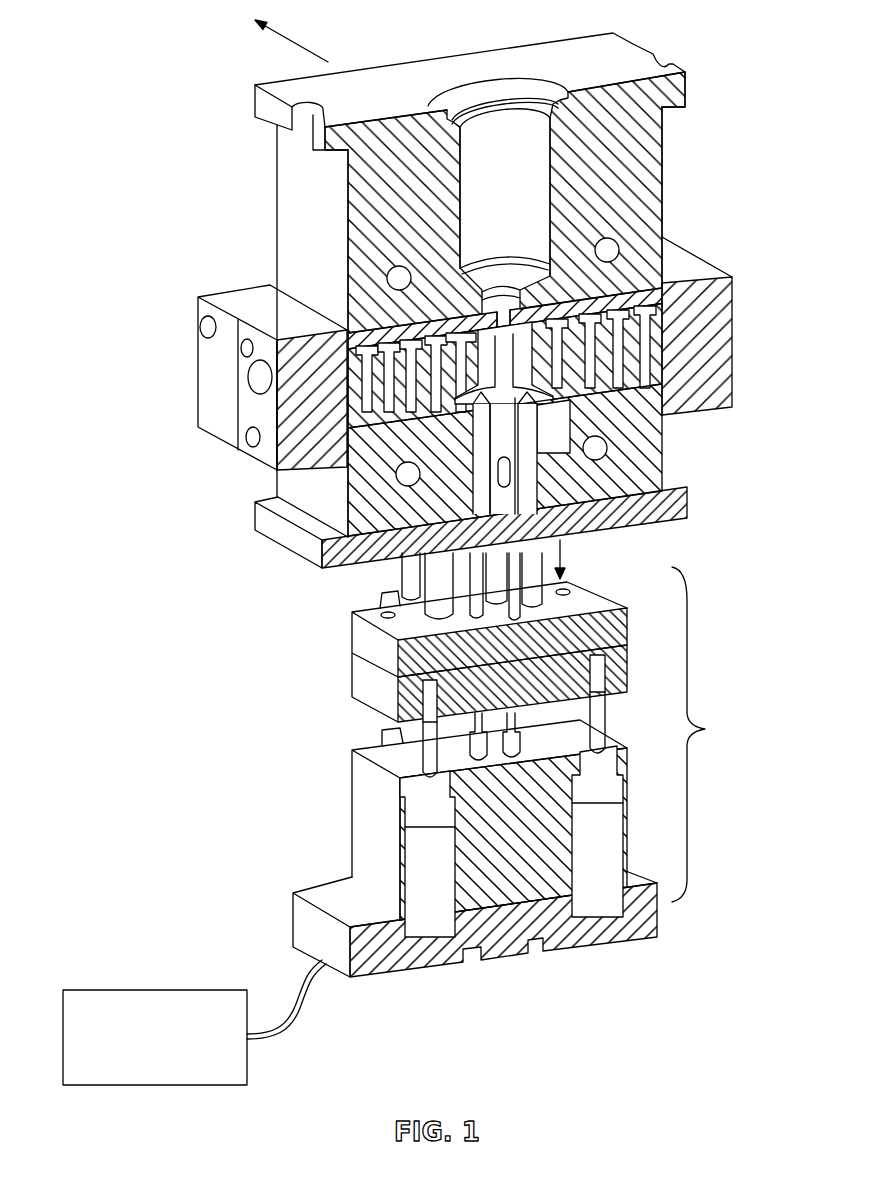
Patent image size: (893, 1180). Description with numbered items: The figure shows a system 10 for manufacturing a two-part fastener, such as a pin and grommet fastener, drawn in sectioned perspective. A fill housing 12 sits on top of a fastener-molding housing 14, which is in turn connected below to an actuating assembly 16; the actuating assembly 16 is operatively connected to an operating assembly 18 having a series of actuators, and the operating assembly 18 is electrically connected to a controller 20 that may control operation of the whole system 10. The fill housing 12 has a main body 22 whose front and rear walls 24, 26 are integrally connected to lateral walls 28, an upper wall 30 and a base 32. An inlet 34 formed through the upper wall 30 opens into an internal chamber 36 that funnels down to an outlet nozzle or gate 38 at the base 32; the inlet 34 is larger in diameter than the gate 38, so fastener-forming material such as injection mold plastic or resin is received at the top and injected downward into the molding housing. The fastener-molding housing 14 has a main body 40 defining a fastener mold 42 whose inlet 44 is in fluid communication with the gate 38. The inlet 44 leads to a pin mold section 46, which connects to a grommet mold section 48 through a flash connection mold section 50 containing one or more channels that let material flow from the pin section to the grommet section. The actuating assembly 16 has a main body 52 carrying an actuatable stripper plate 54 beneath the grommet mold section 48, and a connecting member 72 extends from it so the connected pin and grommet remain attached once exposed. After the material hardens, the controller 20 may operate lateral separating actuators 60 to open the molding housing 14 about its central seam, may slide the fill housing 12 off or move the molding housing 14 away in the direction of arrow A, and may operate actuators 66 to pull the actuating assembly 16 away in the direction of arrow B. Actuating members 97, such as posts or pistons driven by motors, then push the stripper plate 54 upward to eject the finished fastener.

The system 10 is at (191, 54).
The fill housing 12 is at (277, 163).
The fastener-molding housing 14 is at (475, 323).
The actuating assembly 16 is at (637, 483).
The operating assembly 18 is at (518, 772).
The controller 20 is at (143, 1063).
The main body 22 is at (632, 140).
The front wall 24 is at (632, 202).
The rear wall 26 is at (275, 196).
The lateral walls 28 is at (315, 222).
The upper wall 30 is at (407, 72).
The base 32 is at (620, 302).
The inlet 34 is at (490, 97).
The internal chamber 36 is at (522, 128).
The outlet nozzle or gate 38 is at (533, 296).
The main body 40 is at (350, 403).
The fastener mold 42 is at (560, 352).
The inlet 44 is at (218, 423).
The pin mold section 46 is at (360, 490).
The grommet mold section 48 is at (403, 550).
The flash connection mold section 50 is at (355, 556).
The main body 52 is at (355, 518).
The stripper plate 54 is at (550, 438).
The separating actuators 60 is at (733, 380).
The actuators 66 is at (352, 684).
The connecting member 72 is at (549, 440).
The actuating members 97 is at (433, 568).
The arrow A is at (285, 38).
The arrow B is at (565, 556).